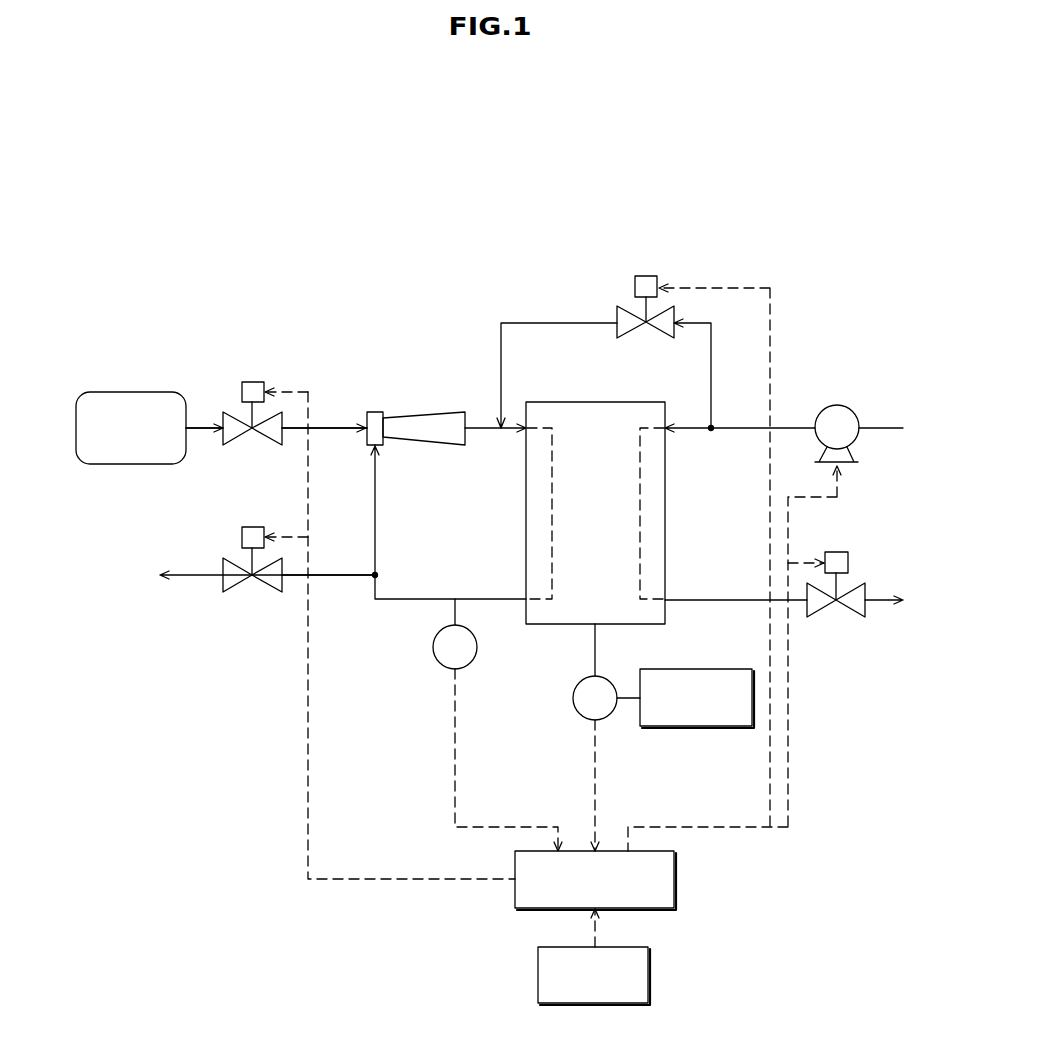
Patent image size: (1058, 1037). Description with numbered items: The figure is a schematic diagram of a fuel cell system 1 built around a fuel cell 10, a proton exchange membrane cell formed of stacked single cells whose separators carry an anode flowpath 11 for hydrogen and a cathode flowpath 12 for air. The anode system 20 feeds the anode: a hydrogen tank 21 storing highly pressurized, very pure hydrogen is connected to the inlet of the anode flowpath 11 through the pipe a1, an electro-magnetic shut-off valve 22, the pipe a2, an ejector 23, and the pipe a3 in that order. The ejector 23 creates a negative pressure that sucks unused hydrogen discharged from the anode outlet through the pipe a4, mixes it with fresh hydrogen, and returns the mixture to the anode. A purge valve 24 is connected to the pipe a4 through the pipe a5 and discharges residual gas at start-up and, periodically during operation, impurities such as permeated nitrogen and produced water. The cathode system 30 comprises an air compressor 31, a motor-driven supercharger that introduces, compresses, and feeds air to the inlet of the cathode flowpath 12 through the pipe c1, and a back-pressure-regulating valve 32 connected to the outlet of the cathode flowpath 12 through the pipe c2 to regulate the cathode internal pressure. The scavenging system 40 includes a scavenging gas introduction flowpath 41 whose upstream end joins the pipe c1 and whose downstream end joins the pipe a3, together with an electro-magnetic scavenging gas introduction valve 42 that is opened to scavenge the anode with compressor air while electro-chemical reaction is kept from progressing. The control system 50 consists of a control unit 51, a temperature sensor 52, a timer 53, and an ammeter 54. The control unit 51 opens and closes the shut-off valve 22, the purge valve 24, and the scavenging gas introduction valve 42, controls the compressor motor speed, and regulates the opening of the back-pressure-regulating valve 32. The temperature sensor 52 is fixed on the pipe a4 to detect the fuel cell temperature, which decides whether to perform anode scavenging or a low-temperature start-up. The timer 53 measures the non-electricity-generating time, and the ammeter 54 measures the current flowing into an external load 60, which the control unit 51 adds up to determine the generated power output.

The fuel cell system 1 is at (199, 220).
The anode system 20 is at (202, 325).
The hydrogen tank 21 is at (131, 428).
The shut-off valve 22 is at (248, 382).
The ejector 23 is at (416, 411).
The purge valve 24 is at (248, 527).
The pipe a1 is at (197, 423).
The pipe a2 is at (341, 424).
The pipe a3 is at (478, 424).
The pipe a4 is at (393, 601).
The pipe a5 is at (348, 577).
The fuel cell 10 is at (548, 401).
The anode flowpath 11 is at (553, 473).
The cathode flowpath 12 is at (640, 532).
The scavenging system 40 is at (537, 295).
The scavenging gas introduction flowpath 41 is at (585, 320).
The scavenging gas introduction valve 42 is at (641, 275).
The pipe c1 is at (726, 428).
The pipe c2 is at (725, 601).
The cathode system 30 is at (817, 353).
The air compressor 31 is at (837, 404).
The back-pressure-regulating valve 32 is at (838, 552).
The control system 50 is at (708, 925).
The control unit 51 is at (548, 651).
The temperature sensor 52 is at (478, 648).
The timer 53 is at (594, 957).
The ammeter 54 is at (574, 703).
The external load 60 is at (697, 698).